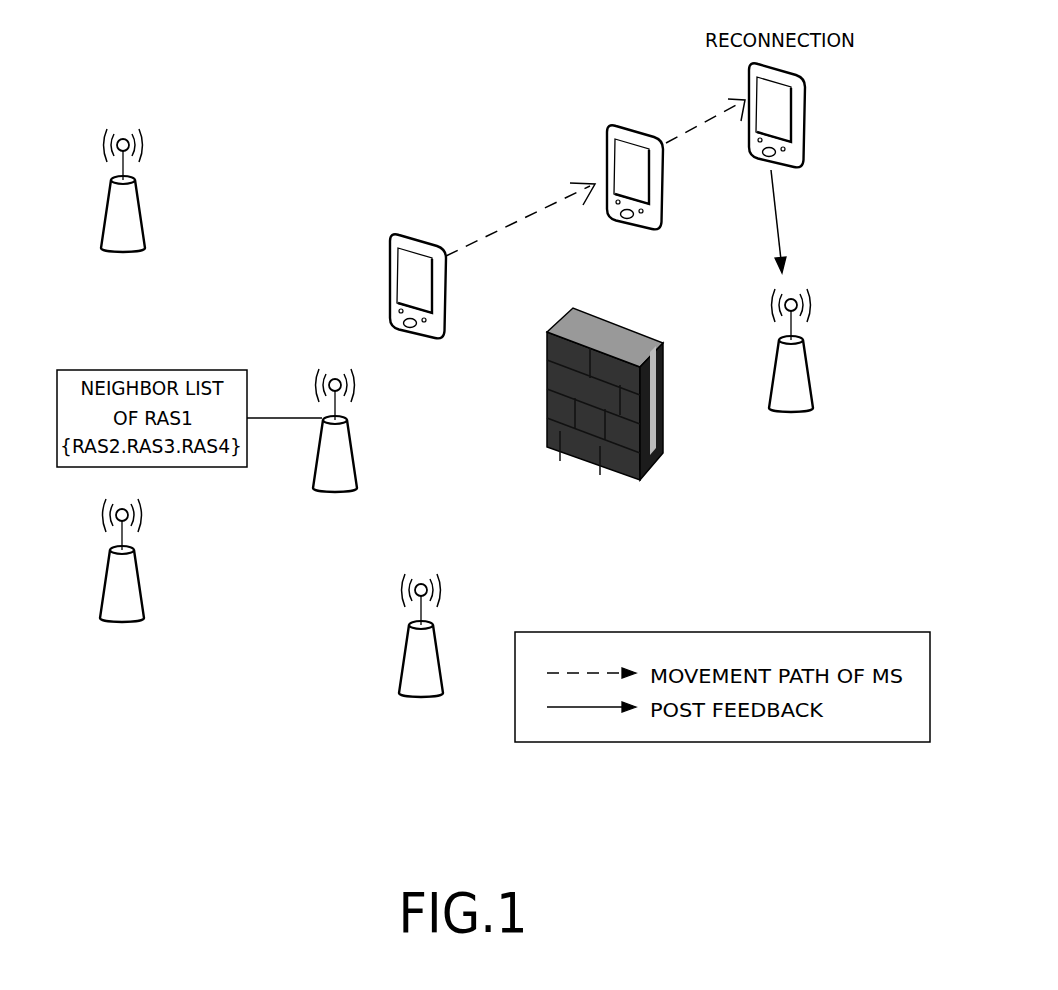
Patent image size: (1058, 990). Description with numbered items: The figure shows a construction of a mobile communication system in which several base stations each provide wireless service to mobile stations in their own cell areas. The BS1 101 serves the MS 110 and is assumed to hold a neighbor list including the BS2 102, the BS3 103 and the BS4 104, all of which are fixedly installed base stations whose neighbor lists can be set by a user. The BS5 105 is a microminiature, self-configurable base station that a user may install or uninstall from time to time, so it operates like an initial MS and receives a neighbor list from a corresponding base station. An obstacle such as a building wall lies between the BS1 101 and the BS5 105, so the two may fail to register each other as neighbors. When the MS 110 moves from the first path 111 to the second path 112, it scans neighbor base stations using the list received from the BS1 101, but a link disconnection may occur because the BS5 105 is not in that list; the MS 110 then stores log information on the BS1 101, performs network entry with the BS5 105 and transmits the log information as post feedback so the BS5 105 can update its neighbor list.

The BS1 101 is at (372, 438).
The BS2 102 is at (159, 199).
The BS3 103 is at (158, 569).
The BS4 104 is at (457, 644).
The BS5 105 is at (827, 359).
The MS 110 is at (420, 237).
The first path 111 is at (542, 213).
The second path 112 is at (717, 120).